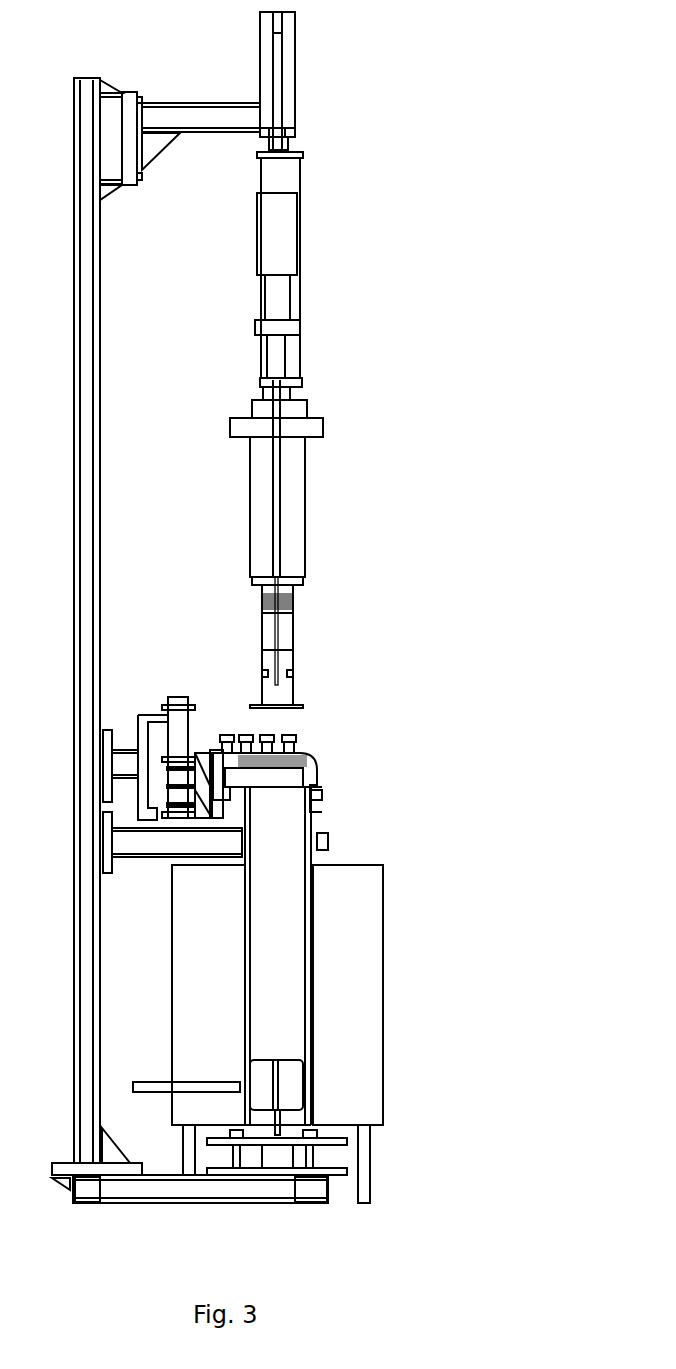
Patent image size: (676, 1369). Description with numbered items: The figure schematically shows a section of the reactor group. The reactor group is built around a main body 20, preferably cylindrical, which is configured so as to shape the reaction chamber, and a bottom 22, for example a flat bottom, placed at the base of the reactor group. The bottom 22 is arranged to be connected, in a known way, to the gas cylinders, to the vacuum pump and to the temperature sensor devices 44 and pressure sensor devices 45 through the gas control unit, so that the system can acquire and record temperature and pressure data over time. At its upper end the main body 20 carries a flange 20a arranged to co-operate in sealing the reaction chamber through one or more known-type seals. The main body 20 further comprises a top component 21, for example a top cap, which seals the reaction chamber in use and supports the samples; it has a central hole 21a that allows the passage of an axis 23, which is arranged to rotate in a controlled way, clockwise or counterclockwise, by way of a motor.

The main body 20 is at (313, 950).
The flange 20a is at (305, 790).
The top component 21 is at (293, 498).
The hole 21a is at (278, 423).
The bottom 22 is at (290, 1077).
The axis 23 is at (278, 570).
The temperature sensor device 44 is at (280, 1135).
The pressure sensor device 45 is at (277, 1156).